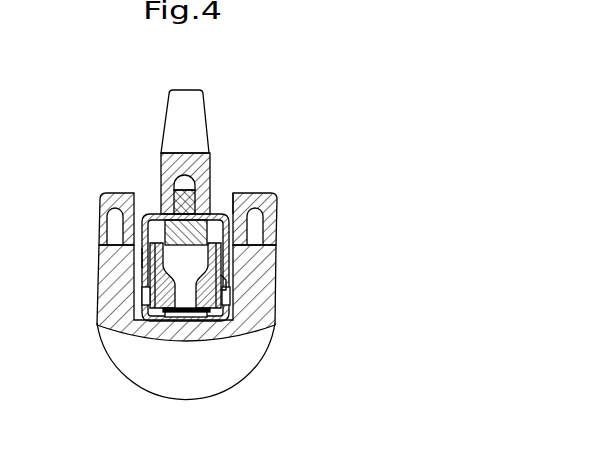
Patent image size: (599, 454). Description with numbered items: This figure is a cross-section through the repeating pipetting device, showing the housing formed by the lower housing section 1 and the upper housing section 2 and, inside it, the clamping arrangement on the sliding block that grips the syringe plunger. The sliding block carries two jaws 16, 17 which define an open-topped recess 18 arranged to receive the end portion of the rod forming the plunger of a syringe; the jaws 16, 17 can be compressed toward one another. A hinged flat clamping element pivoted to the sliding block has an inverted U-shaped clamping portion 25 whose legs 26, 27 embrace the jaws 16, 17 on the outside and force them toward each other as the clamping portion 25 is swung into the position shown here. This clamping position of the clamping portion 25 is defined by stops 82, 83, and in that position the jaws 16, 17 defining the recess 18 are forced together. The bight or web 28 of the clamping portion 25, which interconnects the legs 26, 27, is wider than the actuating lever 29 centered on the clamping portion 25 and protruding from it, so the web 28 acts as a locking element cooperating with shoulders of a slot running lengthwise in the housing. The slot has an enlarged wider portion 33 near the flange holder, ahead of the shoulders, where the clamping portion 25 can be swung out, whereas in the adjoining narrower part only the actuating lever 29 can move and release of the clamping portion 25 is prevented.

The lower housing section 1 is at (107, 288).
The upper housing section 2 is at (98, 208).
The jaw 16 is at (160, 288).
The jaw 17 is at (208, 290).
The recess 18 is at (195, 265).
The clamping portion 25 is at (152, 211).
The leg 26 is at (143, 256).
The leg 27 is at (230, 279).
The web 28 is at (218, 213).
The actuating lever 29 is at (198, 112).
The wider portion of slot 33 is at (227, 200).
The stop 82 is at (141, 298).
The stop 83 is at (237, 310).